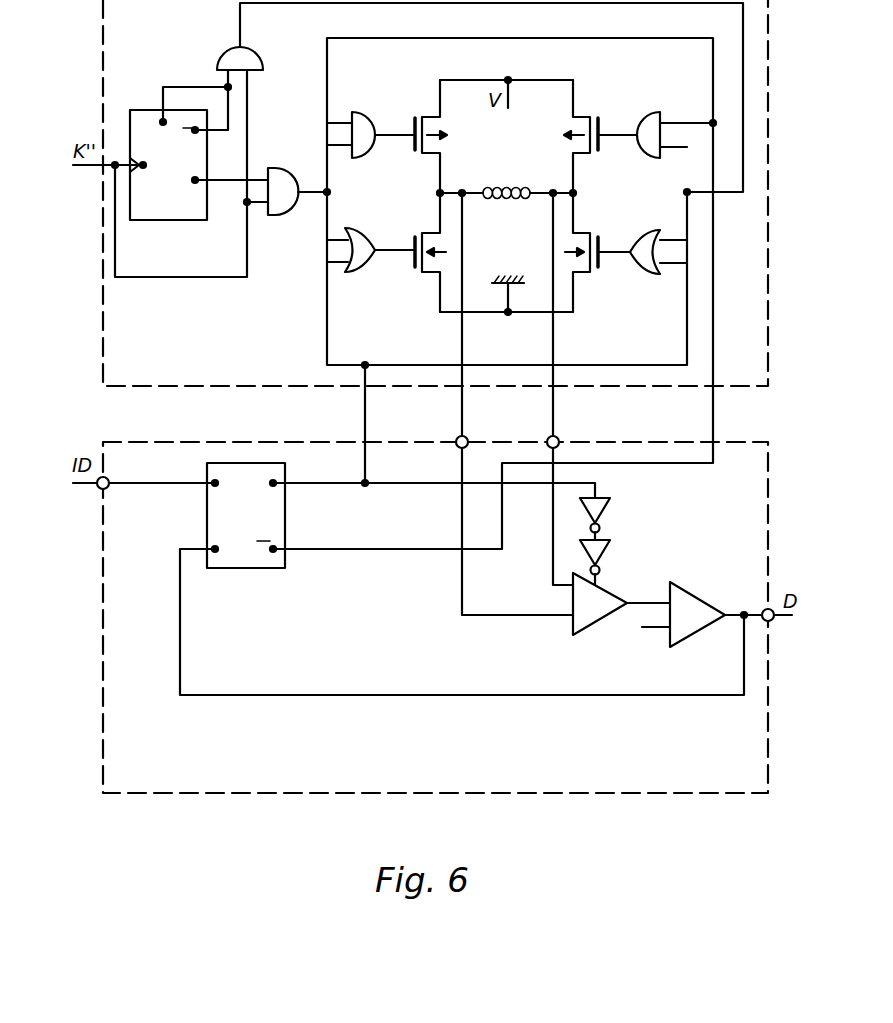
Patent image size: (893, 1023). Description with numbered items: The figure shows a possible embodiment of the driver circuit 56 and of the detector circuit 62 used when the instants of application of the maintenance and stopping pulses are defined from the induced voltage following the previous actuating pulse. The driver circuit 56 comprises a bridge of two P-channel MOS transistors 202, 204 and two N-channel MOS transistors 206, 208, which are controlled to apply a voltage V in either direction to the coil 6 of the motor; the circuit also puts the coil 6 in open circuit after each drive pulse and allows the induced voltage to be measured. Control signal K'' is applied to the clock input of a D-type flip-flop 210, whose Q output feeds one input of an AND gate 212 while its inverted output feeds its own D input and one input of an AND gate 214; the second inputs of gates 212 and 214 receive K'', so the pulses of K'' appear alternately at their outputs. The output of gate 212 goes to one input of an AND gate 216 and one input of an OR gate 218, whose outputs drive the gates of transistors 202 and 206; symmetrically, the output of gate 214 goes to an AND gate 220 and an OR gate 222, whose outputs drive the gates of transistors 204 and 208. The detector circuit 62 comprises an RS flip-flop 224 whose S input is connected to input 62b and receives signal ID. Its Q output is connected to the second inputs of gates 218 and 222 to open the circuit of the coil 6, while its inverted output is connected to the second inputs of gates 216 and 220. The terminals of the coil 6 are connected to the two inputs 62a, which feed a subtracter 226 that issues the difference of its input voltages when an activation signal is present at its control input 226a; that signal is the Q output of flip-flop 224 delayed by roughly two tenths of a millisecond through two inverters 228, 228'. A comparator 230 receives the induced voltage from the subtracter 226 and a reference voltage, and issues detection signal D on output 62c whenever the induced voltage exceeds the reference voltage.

The driver circuit 56 is at (146, 374).
The detector circuit 62 is at (103, 748).
The inputs of circuit 62 62a is at (548, 438).
The input of circuit 62 62b is at (106, 488).
The output 62c is at (764, 608).
The D-type flip-flop 210 is at (172, 220).
The AND gate 212 is at (279, 168).
The AND gate 214 is at (228, 60).
The AND gate 216 is at (362, 112).
The OR gate 218 is at (362, 228).
The AND gate 220 is at (649, 112).
The OR gate 222 is at (649, 233).
The P-channel MOS transistor 202 is at (442, 125).
The P-channel MOS transistor 204 is at (577, 130).
The N-channel MOS transistor 206 is at (442, 242).
The N-channel MOS transistor 208 is at (573, 258).
The coil 6 is at (508, 186).
The RS flip-flop 224 is at (252, 570).
The subtracter 226 is at (573, 627).
The control input 226a is at (598, 584).
The inverter 228 is at (634, 508).
The inverter 228' is at (634, 559).
The comparator 230 is at (693, 633).